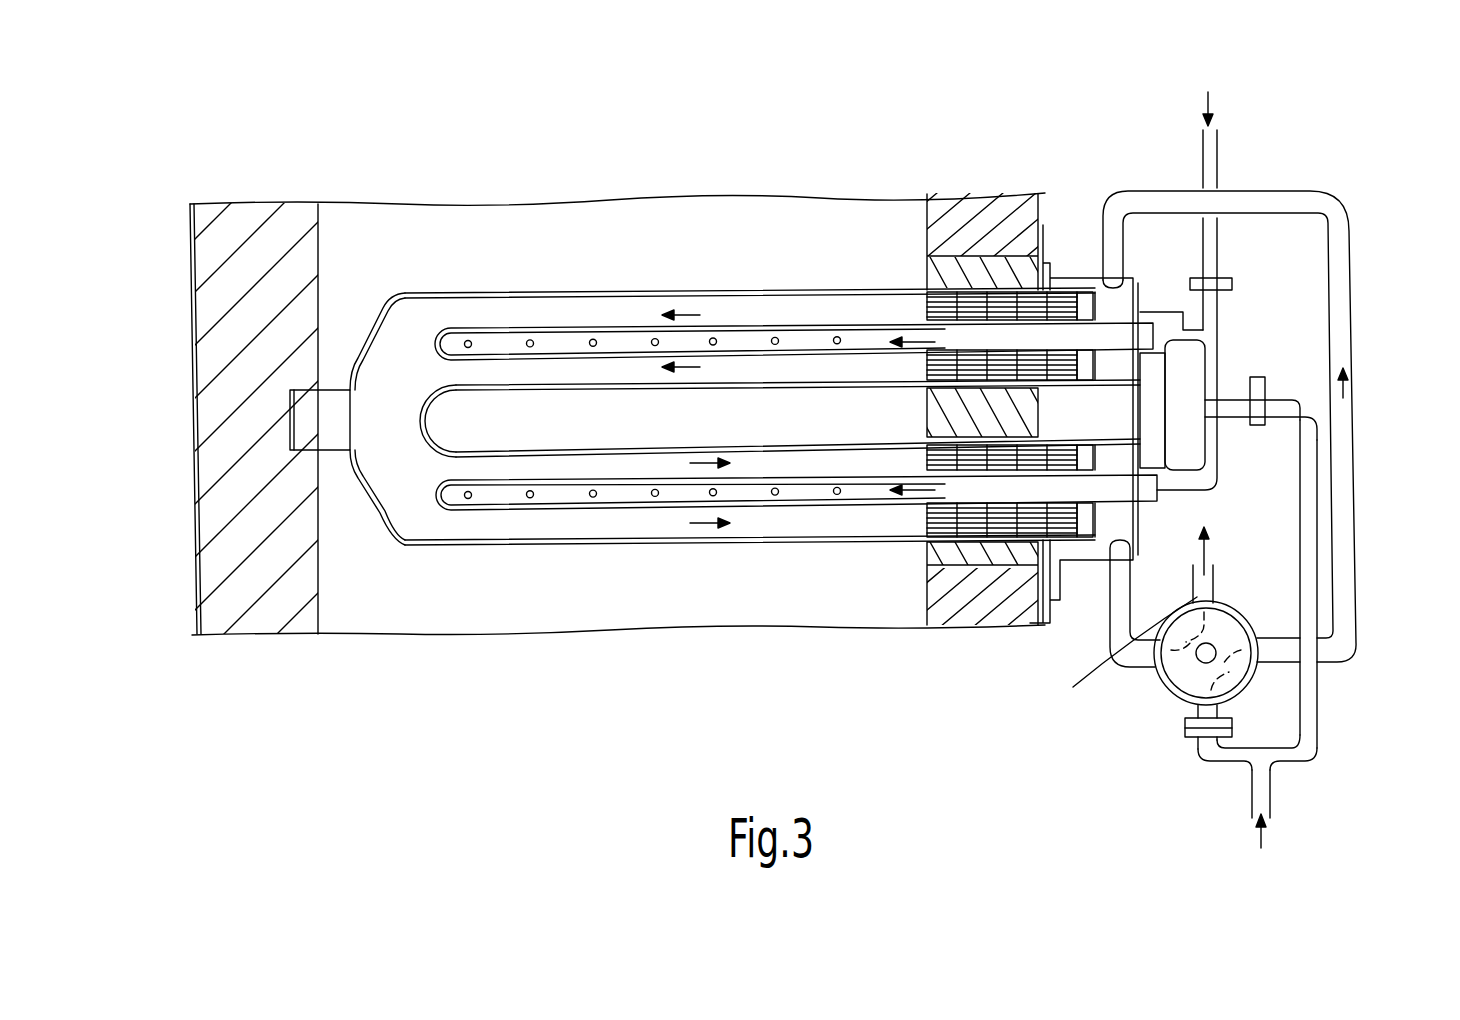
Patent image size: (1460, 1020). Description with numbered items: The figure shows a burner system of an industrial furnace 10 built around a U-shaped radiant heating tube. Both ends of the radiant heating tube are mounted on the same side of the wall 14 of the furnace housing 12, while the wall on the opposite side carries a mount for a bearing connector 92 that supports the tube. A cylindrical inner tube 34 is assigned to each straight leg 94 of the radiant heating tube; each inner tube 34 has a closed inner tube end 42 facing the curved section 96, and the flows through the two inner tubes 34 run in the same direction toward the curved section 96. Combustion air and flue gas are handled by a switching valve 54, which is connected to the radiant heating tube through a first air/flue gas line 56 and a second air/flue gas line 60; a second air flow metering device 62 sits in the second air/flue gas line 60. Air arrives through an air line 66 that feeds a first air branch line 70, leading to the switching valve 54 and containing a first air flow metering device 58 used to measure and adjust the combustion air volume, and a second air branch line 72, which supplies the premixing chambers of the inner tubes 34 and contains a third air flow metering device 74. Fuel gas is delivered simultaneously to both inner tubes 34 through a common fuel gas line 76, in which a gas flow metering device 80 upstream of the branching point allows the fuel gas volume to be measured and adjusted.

The industrial furnace 10 is at (166, 243).
The furnace housing 12 is at (930, 165).
The wall 14 is at (997, 220).
The inner tube 34 is at (578, 327).
The closed inner tube end 42 is at (433, 339).
The switching valve 54 is at (1243, 622).
The first air/flue gas line 56 is at (1352, 250).
The first air flow metering device 58 is at (1185, 737).
The second air/flue gas line 60 is at (1110, 625).
The second air flow metering device 62 is at (1207, 727).
The air line 66 is at (1270, 782).
The first air branch line 70 is at (1212, 760).
The second air branch line 72 is at (1318, 693).
The third air flow metering device 74 is at (1267, 387).
The fuel gas line 76 is at (1220, 257).
The gas flow metering device 80 is at (1233, 283).
The bearing connector 92 is at (312, 452).
The straight leg 94 is at (503, 293).
The curved section 96 is at (370, 522).